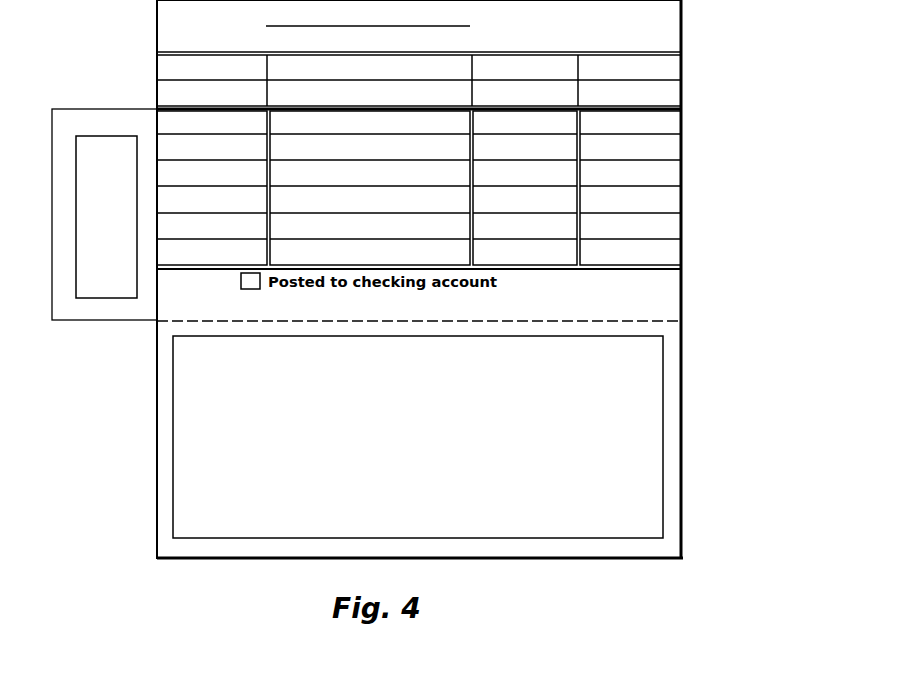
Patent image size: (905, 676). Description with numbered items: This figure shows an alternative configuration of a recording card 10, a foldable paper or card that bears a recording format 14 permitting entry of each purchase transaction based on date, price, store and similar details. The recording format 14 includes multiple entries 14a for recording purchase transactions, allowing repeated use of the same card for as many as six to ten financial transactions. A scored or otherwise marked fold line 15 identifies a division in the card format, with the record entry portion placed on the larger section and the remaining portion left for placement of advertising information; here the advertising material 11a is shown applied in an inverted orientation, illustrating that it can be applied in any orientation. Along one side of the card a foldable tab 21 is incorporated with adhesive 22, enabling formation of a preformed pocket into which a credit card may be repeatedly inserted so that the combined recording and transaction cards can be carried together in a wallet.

The recording card 10 is at (700, 246).
The recording format 14 is at (667, 33).
The multiple entries 14a is at (663, 120).
The fold line 15 is at (653, 318).
The advertising material 11a is at (635, 362).
The foldable tab 21 is at (62, 308).
The adhesive 22 is at (95, 150).